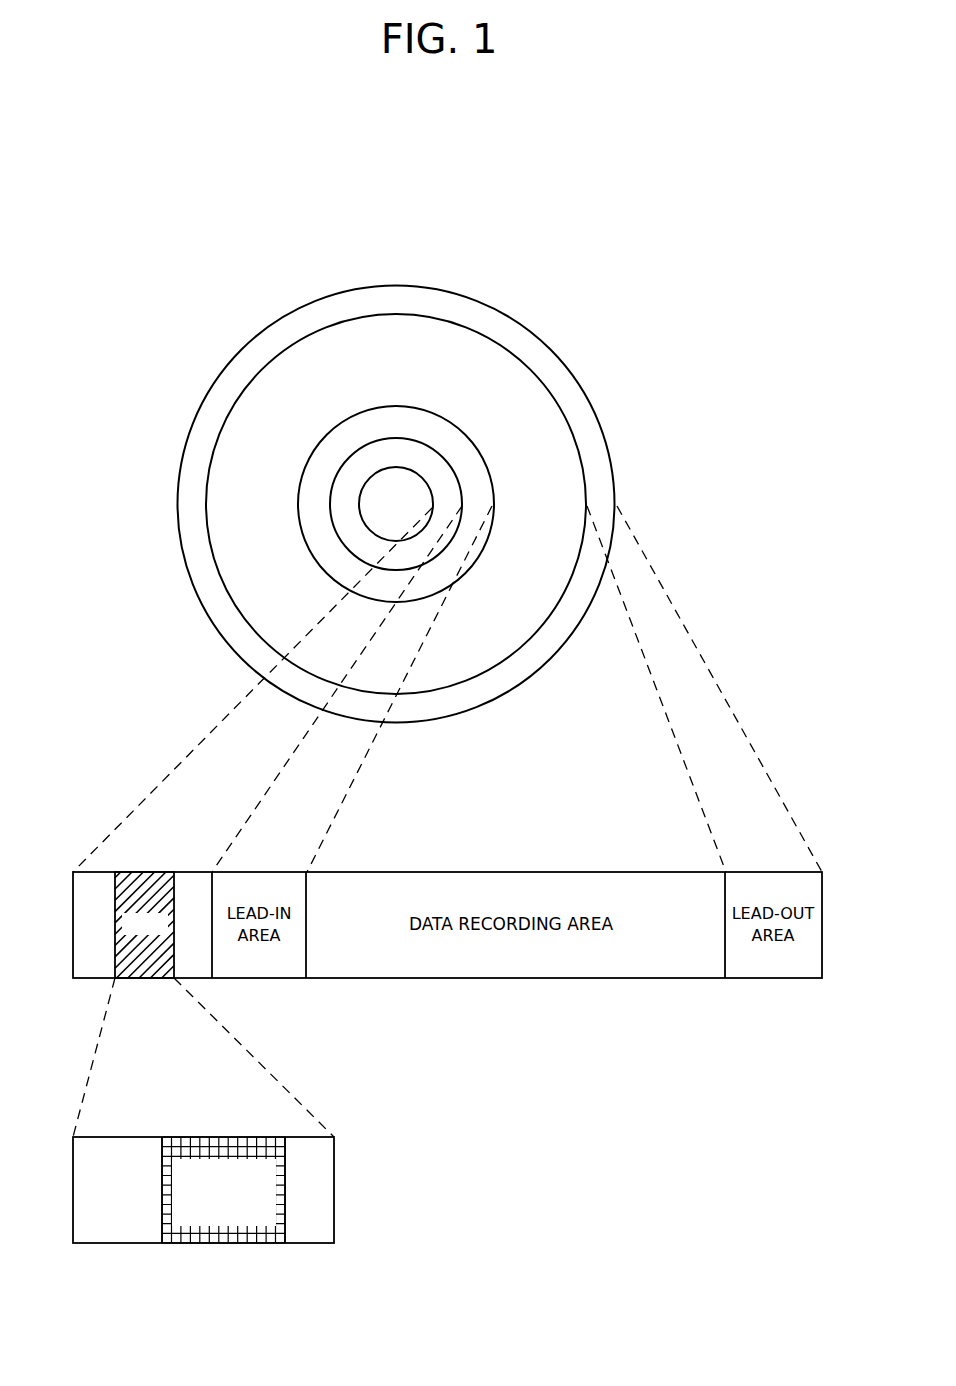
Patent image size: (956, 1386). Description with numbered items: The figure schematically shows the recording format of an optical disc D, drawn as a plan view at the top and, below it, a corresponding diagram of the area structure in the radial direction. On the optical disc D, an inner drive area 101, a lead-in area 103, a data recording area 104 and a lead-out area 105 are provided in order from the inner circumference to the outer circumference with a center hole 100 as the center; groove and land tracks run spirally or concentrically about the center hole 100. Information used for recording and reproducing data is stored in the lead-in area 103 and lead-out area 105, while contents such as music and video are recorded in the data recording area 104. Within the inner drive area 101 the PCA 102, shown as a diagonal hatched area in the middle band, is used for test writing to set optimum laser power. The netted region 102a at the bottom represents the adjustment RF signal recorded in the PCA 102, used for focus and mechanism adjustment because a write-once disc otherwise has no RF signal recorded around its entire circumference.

The optical disc D is at (488, 268).
The center hole 100 is at (359, 503).
The inner drive area 101 is at (423, 458).
The PCA 102 is at (145, 870).
The adjustment RF signal 102a is at (232, 1243).
The lead-in area 103 is at (475, 470).
The data recording area 104 is at (548, 483).
The lead-out area 105 is at (602, 498).